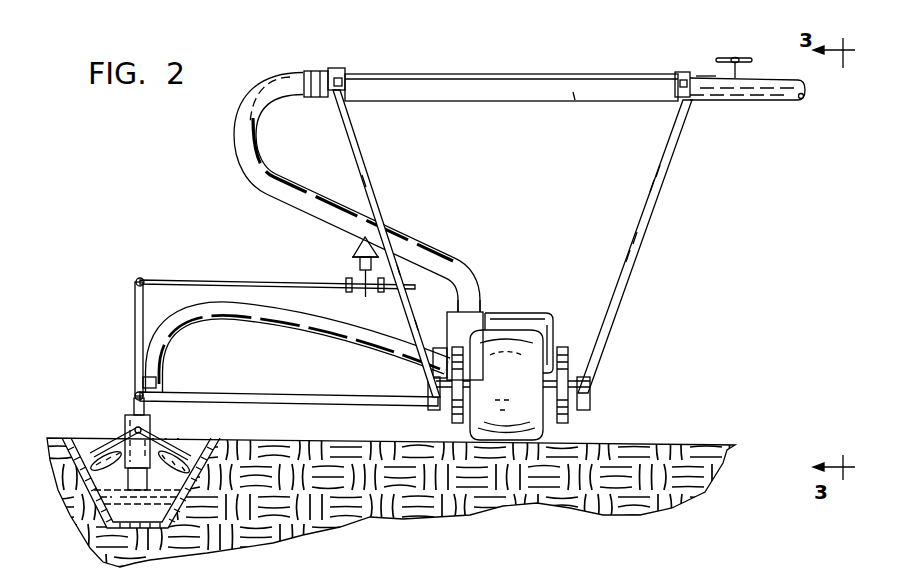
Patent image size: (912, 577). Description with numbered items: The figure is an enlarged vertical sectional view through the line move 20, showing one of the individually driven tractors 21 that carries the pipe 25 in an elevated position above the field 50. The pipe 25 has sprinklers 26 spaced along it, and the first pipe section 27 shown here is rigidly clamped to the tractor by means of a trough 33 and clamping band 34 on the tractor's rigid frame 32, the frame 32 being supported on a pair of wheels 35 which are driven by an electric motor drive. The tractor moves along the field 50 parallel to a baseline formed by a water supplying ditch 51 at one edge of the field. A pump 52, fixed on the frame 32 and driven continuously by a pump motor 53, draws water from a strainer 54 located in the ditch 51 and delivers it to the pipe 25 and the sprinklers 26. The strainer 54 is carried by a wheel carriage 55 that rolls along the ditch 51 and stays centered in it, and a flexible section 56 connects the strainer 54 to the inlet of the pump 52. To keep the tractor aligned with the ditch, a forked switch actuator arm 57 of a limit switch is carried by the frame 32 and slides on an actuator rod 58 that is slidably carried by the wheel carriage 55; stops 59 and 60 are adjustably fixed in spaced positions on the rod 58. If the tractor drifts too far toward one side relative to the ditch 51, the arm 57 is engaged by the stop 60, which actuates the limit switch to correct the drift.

The line move 20 is at (666, 213).
The tractor 21 is at (636, 281).
The pipe 25 is at (707, 75).
The sprinklers 26 is at (738, 58).
The first pipe section 27 is at (756, 100).
The rigid frame 32 is at (509, 218).
The trough 33 is at (540, 103).
The clamping band 34 is at (345, 72).
The wheels 35 is at (508, 330).
The field 50 is at (720, 440).
The water supplying ditch 51 is at (70, 438).
The pump 52 is at (465, 312).
The pump motor 53 is at (538, 315).
The strainer 54 is at (150, 428).
The wheel carriage 55 is at (126, 433).
The flexible section 56 is at (262, 336).
The forked switch actuator arm 57 is at (362, 280).
The actuator rod 58 is at (230, 282).
The stop 59 is at (349, 292).
The stop 60 is at (381, 292).